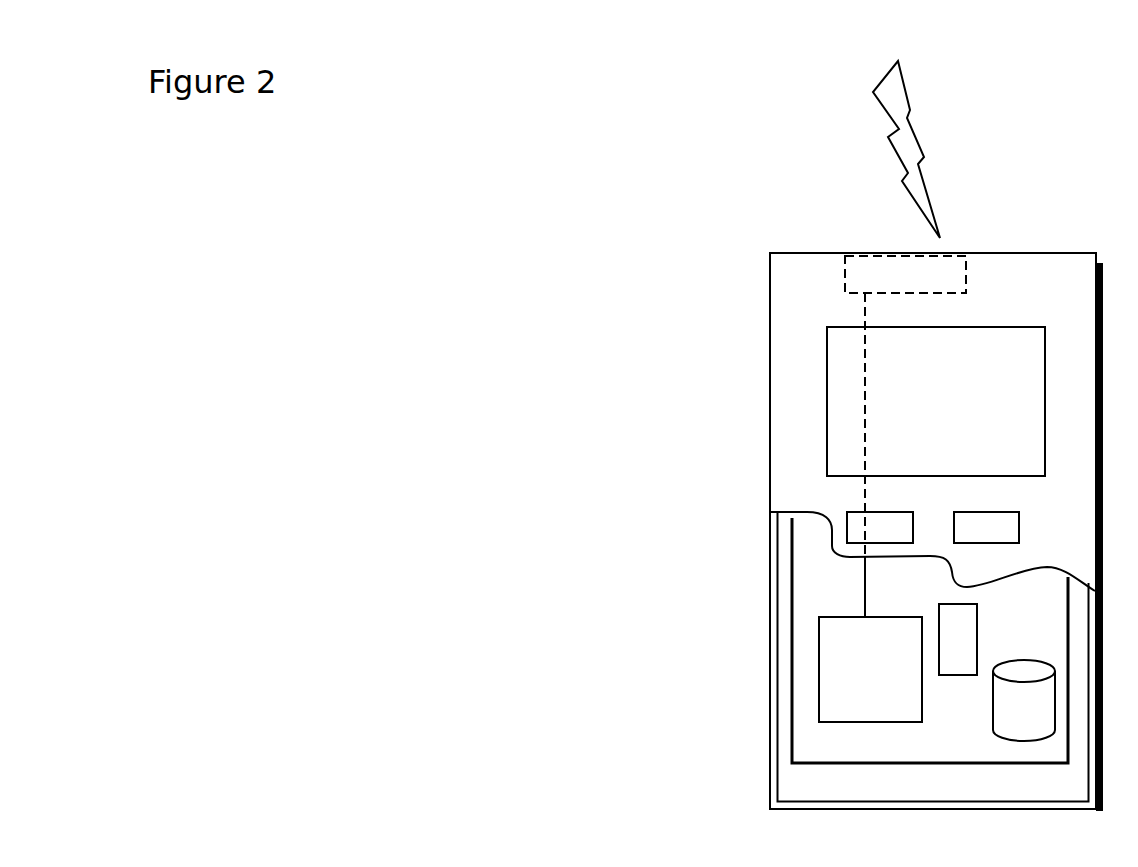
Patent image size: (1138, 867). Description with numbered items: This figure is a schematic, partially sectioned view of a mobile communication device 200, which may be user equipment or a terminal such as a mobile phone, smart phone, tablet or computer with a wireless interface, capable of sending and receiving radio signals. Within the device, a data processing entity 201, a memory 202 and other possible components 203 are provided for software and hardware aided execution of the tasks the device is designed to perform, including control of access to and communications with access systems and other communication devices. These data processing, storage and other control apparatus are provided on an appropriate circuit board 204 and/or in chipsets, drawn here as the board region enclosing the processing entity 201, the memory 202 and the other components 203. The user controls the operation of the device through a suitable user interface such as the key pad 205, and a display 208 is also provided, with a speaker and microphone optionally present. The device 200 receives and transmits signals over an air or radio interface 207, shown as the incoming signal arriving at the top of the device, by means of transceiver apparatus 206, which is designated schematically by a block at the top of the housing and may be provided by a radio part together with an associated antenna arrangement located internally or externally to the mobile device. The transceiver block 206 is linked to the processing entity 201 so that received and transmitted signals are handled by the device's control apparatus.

The communication device 200 is at (772, 299).
The data processing entity 201 is at (828, 651).
The memory 202 is at (1017, 714).
The other possible components 203 is at (957, 623).
The circuit board 204 is at (819, 743).
The key pad 205 is at (852, 528).
The transceiver apparatus 206 is at (953, 269).
The air or radio interface 207 is at (946, 170).
The display 208 is at (845, 386).